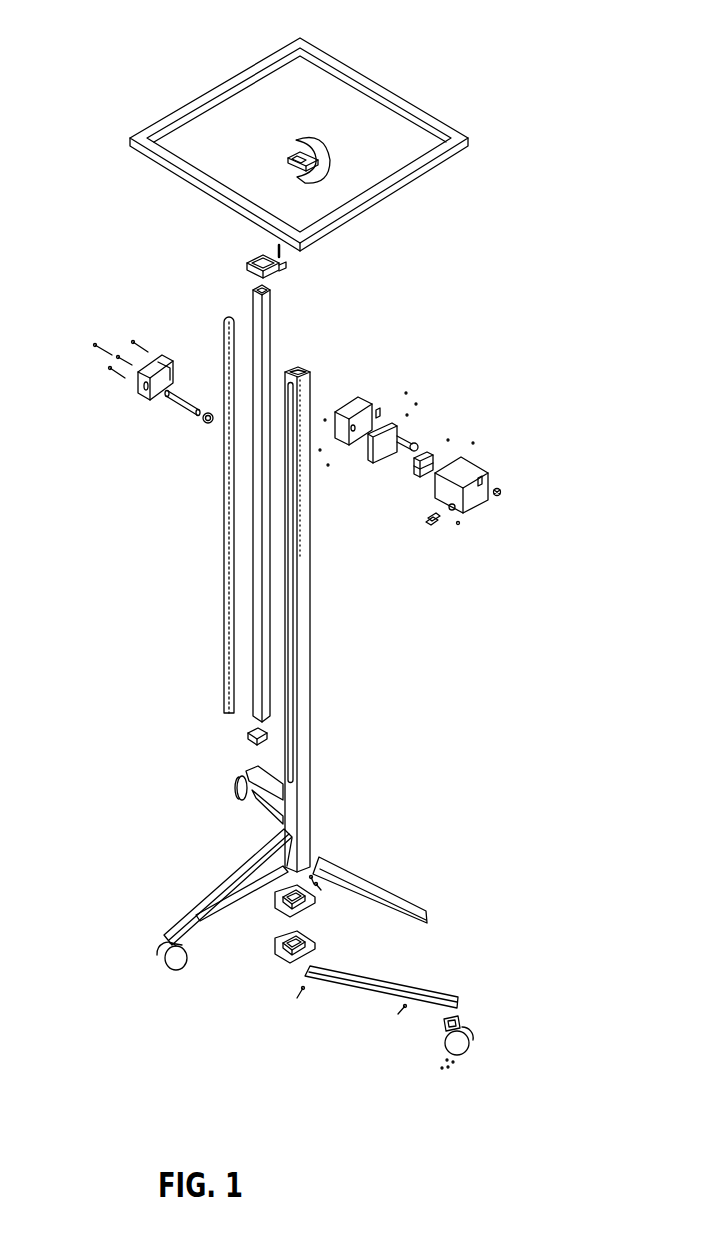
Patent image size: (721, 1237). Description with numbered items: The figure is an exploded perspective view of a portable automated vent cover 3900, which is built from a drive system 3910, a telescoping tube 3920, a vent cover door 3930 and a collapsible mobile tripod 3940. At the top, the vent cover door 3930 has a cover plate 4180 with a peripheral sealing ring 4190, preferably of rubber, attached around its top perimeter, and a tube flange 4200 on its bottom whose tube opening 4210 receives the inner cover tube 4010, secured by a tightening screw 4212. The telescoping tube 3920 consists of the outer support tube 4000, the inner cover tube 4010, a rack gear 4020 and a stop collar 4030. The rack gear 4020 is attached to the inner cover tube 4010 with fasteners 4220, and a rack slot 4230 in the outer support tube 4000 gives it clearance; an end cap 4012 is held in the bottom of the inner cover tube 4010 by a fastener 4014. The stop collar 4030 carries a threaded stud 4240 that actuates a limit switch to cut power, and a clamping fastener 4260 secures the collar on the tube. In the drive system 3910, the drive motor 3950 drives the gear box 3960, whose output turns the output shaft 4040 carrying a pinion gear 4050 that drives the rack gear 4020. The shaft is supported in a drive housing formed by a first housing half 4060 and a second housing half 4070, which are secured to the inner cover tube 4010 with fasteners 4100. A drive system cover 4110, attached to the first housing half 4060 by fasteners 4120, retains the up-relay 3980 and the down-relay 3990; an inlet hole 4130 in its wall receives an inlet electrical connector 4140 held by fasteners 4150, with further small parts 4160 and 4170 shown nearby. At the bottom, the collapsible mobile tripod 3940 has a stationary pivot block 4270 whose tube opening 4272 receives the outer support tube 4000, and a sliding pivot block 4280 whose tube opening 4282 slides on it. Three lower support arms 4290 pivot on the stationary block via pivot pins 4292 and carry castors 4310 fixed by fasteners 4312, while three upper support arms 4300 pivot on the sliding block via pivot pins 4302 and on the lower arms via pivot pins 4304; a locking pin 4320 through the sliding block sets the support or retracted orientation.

The portable automated vent cover 3900 is at (158, 675).
The drive system 3910 is at (505, 530).
The telescoping tube 3920 is at (270, 547).
The vent cover door 3930 is at (305, 130).
The collapsible mobile tripod 3940 is at (337, 947).
The drive motor 3950 is at (413, 450).
The gear box 3960 is at (387, 452).
The up-relay 3980 is at (474, 458).
The down-relay 3990 is at (418, 478).
The outer support tube 4000 is at (363, 592).
The inner cover tube 4010 is at (272, 303).
The end cap 4012 is at (247, 740).
The fastener 4014 is at (243, 704).
The rack gear 4020 is at (225, 563).
The stop collar 4030 is at (257, 263).
The output shaft 4040 is at (182, 408).
The pinion gear 4050 is at (205, 423).
The first housing half 4060 is at (370, 402).
The second housing half 4070 is at (140, 395).
The fasteners 4100 is at (152, 353).
The drive system cover 4110 is at (487, 460).
The fasteners 4120 is at (492, 492).
The inlet hole 4130 is at (430, 520).
The inlet electrical connector 4140 is at (428, 527).
The fasteners 4150 is at (428, 530).
The fastener 4160 is at (486, 497).
The pin 4170 is at (457, 523).
The cover plate 4180 is at (340, 108).
The peripheral sealing ring 4190 is at (415, 105).
The tube flange 4200 is at (196, 113).
The tube opening 4210 is at (290, 165).
The tightening screw 4212 is at (312, 138).
The fasteners 4220 is at (317, 753).
The rack slot 4230 is at (312, 388).
The threaded stud 4240 is at (285, 253).
The clamping fastener 4260 is at (253, 282).
The stationary pivot block 4270 is at (275, 955).
The tube opening 4272 is at (308, 933).
The sliding pivot block 4280 is at (275, 915).
The tube opening 4282 is at (305, 886).
The lower support arms 4290 is at (440, 987).
The pivot pins 4292 is at (303, 997).
The upper support arms 4300 is at (425, 901).
The pivot pins 4302 is at (318, 888).
The pivot pins 4304 is at (397, 1013).
The castors 4310 is at (155, 950).
The fasteners 4312 is at (450, 1072).
The locking pin 4320 is at (330, 927).